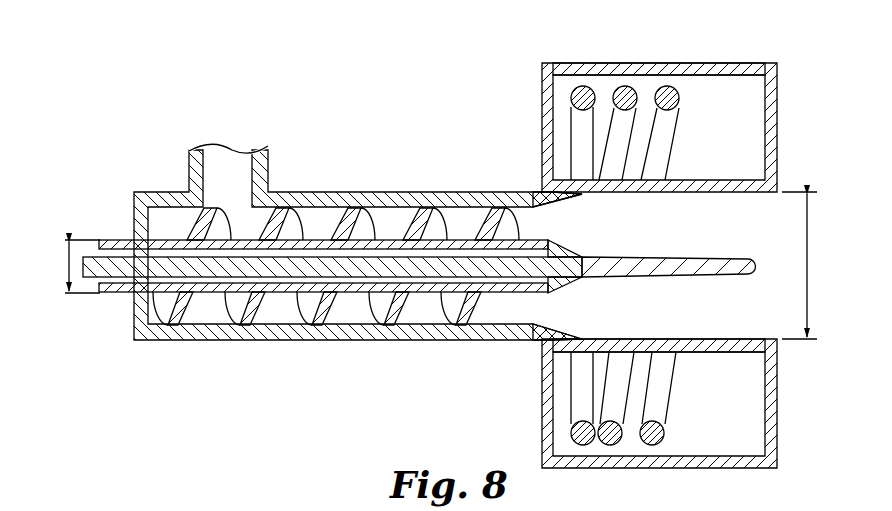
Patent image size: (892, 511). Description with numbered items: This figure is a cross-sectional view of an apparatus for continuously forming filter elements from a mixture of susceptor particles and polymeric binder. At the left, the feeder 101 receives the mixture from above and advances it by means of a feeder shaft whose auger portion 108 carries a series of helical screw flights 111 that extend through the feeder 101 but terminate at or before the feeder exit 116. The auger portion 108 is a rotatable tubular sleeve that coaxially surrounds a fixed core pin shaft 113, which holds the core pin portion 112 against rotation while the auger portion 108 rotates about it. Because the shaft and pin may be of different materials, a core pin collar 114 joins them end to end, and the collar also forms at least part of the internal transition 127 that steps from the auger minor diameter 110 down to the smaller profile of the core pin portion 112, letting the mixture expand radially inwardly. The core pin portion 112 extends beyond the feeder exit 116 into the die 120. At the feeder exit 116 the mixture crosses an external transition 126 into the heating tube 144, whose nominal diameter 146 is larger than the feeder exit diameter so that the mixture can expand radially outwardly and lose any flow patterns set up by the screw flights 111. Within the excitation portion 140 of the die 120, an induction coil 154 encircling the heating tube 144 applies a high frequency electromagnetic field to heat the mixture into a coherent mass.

The feeder 101 is at (278, 334).
The auger portion 108 is at (108, 240).
The auger minor diameter 110 is at (67, 262).
The screw flights 111 is at (176, 318).
The core pin portion 112 is at (705, 261).
The fixed core pin shaft 113 is at (94, 278).
The core pin collar 114 is at (566, 253).
The internal transition 127 is at (566, 253).
The feeder exit 116 is at (521, 198).
The die 120 is at (777, 73).
The external transition 126 is at (556, 329).
The excitation portion 140 is at (615, 68).
The heating tube 144 is at (686, 340).
The heating tube nominal diameter 146 is at (807, 289).
The induction coil 154 is at (672, 104).